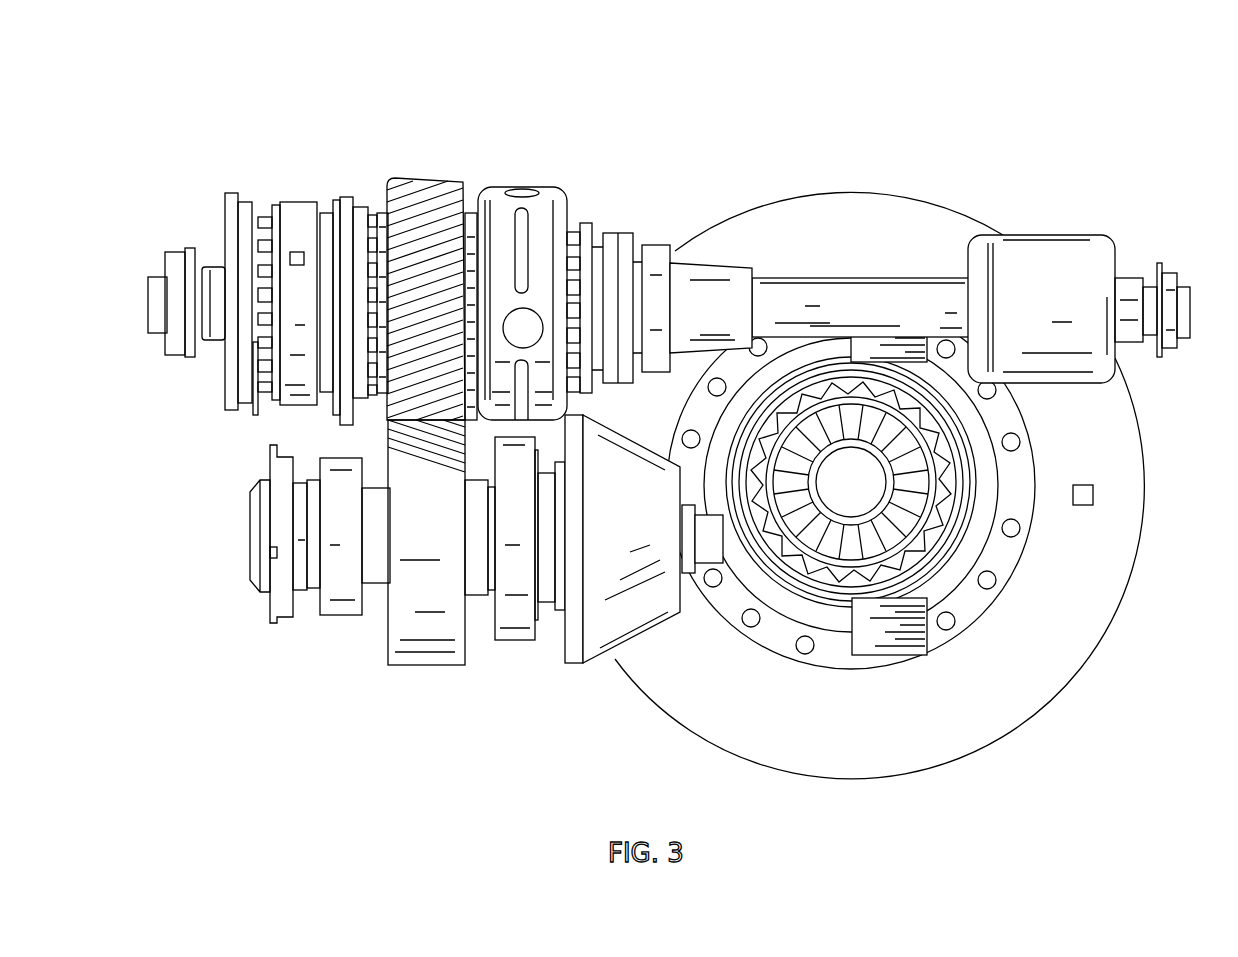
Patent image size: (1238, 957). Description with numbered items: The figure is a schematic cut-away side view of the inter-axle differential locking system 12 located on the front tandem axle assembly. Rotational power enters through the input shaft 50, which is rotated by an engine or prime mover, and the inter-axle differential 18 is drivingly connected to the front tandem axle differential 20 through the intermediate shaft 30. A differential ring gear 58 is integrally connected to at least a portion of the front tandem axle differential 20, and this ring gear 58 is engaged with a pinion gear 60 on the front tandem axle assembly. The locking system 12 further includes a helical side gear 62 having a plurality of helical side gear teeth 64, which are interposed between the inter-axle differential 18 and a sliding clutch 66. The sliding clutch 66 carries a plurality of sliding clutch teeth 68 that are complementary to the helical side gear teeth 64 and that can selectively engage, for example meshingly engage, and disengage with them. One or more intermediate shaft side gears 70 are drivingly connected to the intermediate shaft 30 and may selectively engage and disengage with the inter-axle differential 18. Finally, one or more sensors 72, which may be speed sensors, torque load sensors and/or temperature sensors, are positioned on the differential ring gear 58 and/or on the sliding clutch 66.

The inter-axle differential locking system 12 is at (1078, 120).
The inter-axle differential 18 is at (558, 171).
The front tandem axle differential 20 is at (938, 535).
The intermediate shaft 30 is at (812, 298).
The input shaft 50 is at (212, 335).
The differential ring gear 58 is at (843, 740).
The pinion gear 60 is at (548, 678).
The helical side gear 62 is at (449, 256).
The helical side gear teeth 64 is at (470, 223).
The sliding clutch 66 is at (330, 241).
The sliding clutch teeth 68 is at (365, 213).
The intermediate shaft side gears 70 is at (590, 222).
The sensors 72 is at (290, 259).